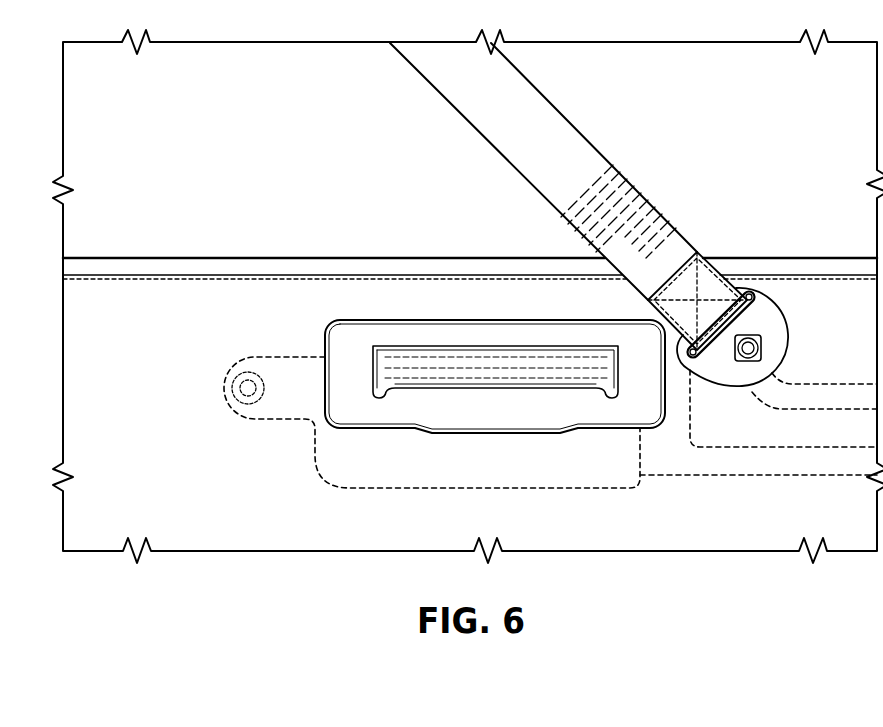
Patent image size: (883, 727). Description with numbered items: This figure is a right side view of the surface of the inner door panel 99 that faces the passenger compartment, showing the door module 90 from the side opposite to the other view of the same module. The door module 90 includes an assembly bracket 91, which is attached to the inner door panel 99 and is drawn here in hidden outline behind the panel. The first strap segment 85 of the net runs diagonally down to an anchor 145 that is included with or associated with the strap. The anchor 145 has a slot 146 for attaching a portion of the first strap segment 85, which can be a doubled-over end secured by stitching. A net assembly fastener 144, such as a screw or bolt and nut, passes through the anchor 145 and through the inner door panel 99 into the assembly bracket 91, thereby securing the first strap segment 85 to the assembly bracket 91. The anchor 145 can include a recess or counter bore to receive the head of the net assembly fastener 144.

The first strap segment 85 is at (590, 162).
The door module 90 is at (334, 318).
The assembly bracket 91 is at (241, 357).
The inner door panel 99 is at (273, 537).
The net assembly fastener 144 is at (760, 334).
The anchor 145 is at (791, 337).
The slot 146 is at (705, 352).